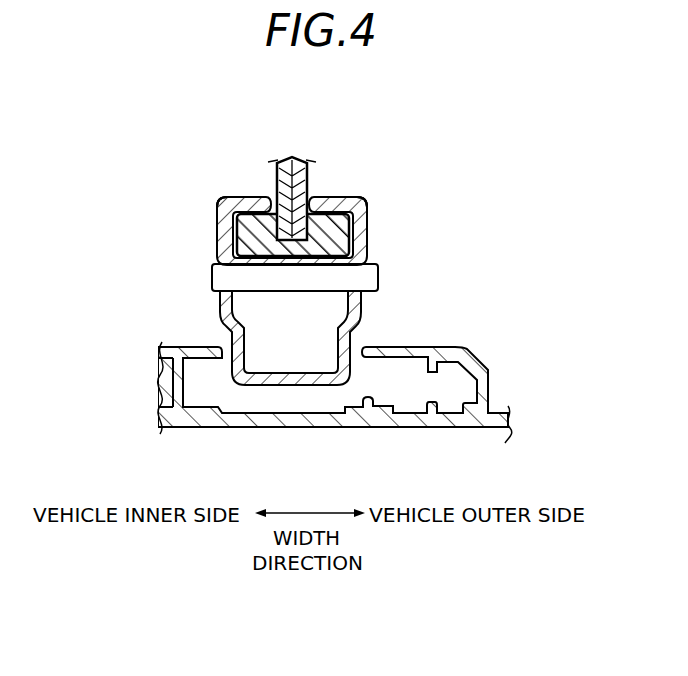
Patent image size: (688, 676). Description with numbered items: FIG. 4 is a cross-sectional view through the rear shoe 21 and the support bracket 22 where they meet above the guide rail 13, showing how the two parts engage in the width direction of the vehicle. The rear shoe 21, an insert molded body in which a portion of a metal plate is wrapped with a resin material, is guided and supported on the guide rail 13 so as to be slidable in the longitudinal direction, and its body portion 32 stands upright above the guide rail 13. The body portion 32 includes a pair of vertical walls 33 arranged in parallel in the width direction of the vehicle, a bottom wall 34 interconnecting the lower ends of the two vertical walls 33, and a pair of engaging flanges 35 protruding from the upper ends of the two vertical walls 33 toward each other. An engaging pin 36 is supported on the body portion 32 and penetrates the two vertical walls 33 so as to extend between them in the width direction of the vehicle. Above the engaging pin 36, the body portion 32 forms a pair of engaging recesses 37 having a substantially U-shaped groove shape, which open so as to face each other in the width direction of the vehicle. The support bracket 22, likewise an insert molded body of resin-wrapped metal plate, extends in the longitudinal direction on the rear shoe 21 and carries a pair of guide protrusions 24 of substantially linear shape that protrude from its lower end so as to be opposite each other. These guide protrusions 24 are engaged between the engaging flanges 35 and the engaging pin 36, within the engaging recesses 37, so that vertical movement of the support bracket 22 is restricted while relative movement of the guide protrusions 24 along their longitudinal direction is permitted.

The guide rail 13 is at (455, 437).
The rear shoe 21 is at (343, 217).
The support bracket 22 is at (264, 179).
The guide protrusion 24 is at (322, 263).
The body portion 32 is at (362, 198).
The vertical wall 33 is at (217, 229).
The bottom wall 34 is at (262, 375).
The engaging flange 35 is at (247, 195).
The engaging pin 36 is at (378, 276).
The engaging recess 37 is at (222, 209).